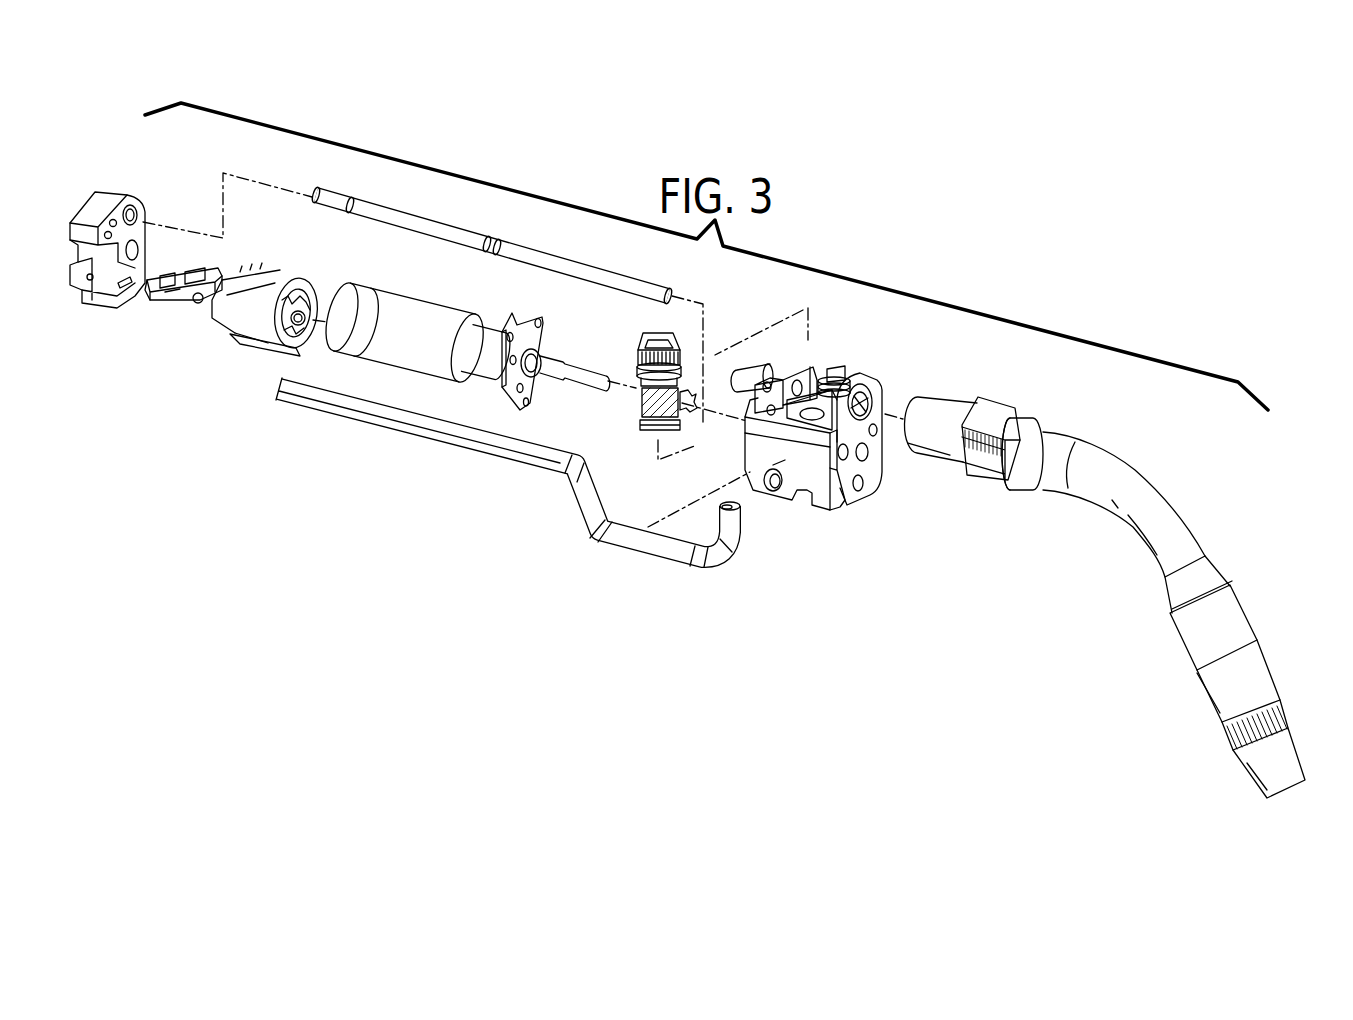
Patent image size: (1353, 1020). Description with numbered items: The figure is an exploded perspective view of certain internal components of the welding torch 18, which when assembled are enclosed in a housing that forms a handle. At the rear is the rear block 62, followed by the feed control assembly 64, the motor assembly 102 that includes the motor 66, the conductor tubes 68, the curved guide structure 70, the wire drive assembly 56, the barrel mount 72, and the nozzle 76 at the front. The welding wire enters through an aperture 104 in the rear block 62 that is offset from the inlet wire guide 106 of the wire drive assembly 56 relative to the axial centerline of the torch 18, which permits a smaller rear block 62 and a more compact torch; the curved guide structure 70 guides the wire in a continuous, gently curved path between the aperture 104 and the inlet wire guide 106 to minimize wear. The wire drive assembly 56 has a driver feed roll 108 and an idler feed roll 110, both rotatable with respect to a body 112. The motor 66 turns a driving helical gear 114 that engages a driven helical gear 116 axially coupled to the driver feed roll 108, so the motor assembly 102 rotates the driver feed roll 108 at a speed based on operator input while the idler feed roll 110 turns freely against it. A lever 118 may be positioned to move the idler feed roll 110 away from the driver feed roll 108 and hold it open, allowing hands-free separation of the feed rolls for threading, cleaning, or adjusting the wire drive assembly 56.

The welding torch 18 is at (687, 463).
The wire drive assembly 56 is at (819, 418).
The rear block 62 is at (107, 218).
The feed control assembly 64 is at (233, 286).
The motor 66 is at (418, 321).
The conductor tubes 68 is at (508, 472).
The curved guide structure 70 is at (492, 234).
The barrel mount 72 is at (973, 420).
The nozzle 76 is at (1174, 610).
The motor assembly 102 is at (548, 376).
The aperture 104 is at (147, 184).
The inlet wire guide 106 is at (741, 342).
The driver feed roll 108 is at (636, 344).
The idler feed roll 110 is at (833, 345).
The body 112 is at (813, 466).
The driving helical gear 114 is at (699, 440).
The driven helical gear 116 is at (641, 436).
The lever 118 is at (784, 346).